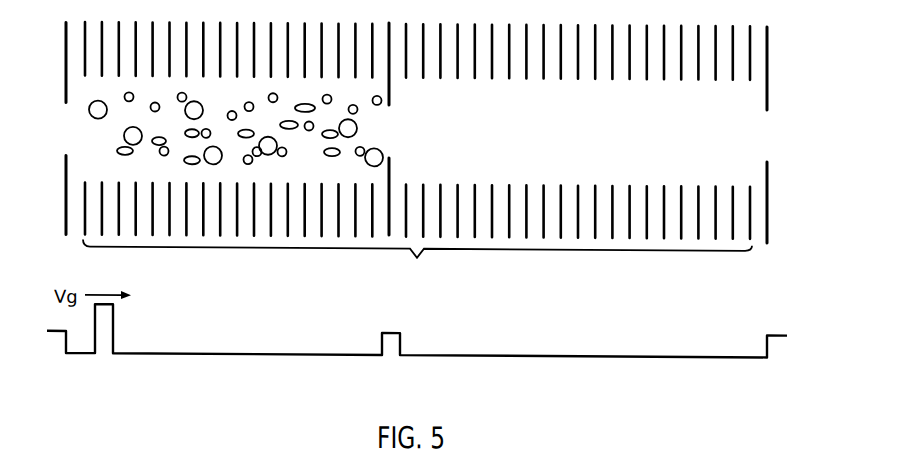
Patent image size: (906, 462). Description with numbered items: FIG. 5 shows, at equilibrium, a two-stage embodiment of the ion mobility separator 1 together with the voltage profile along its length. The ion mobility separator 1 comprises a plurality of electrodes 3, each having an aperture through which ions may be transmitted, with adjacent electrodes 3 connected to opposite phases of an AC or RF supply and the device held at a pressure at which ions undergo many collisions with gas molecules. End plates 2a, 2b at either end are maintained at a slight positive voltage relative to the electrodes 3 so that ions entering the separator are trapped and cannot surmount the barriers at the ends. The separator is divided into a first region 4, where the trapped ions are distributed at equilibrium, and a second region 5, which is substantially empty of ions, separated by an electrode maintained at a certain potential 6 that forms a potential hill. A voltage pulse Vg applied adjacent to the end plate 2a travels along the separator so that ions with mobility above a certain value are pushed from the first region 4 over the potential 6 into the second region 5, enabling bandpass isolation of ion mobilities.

The ion mobility separator 1 is at (70, 132).
The end plate 2a is at (67, 214).
The end plate 2b is at (767, 218).
The electrodes 3 is at (417, 263).
The first region 4 is at (301, 160).
The second region 5 is at (540, 142).
The potential 6 is at (390, 344).